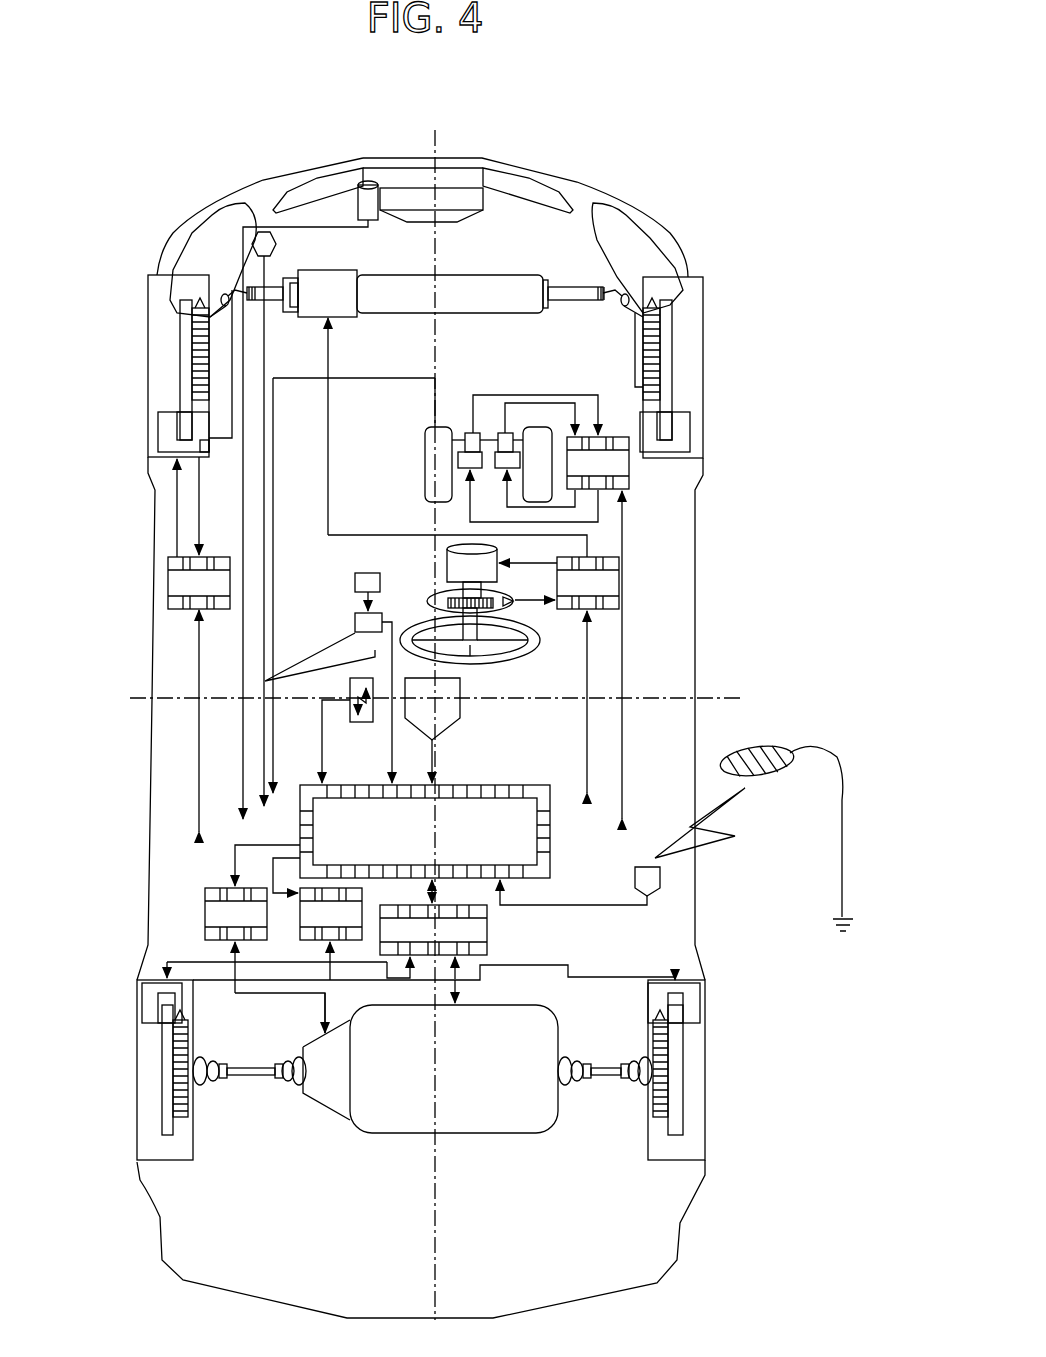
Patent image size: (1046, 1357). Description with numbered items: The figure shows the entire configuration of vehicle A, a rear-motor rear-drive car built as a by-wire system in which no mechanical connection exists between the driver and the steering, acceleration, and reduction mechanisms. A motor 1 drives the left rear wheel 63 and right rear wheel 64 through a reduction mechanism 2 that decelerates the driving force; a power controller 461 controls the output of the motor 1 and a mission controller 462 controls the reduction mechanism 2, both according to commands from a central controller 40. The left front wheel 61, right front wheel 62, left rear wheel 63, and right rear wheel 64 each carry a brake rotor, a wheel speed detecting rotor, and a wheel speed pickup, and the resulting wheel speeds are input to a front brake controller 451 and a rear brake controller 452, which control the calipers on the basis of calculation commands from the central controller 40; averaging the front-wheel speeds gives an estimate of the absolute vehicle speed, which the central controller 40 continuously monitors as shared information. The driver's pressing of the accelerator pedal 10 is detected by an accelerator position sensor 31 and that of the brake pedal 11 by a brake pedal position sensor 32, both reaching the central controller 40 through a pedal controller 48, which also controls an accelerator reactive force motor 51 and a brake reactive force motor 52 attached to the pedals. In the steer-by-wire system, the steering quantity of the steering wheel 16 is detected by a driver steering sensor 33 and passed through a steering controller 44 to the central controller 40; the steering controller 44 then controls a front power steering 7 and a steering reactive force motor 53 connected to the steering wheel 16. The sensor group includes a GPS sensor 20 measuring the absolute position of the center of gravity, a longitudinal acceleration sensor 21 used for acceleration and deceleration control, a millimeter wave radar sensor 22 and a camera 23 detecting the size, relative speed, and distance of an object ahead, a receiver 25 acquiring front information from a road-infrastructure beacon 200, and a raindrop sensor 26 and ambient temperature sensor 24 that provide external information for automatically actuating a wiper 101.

The vehicle A is at (563, 183).
The motor 1 is at (506, 1128).
The reduction mechanism 2 is at (326, 1095).
The power steering 7 is at (500, 277).
The accelerator pedal 10 is at (537, 427).
The brake pedal 11 is at (425, 448).
The steering wheel 16 is at (520, 656).
The GPS sensor 20 is at (462, 718).
The longitudinal acceleration sensor 21 is at (359, 727).
The millimeter wave radar sensor 22 is at (415, 222).
The camera 23 is at (368, 183).
The ambient temperature sensor 24 is at (278, 244).
The receiver 25 is at (635, 881).
The raindrop sensor 26 is at (355, 580).
The accelerator position sensor 31 is at (501, 433).
The brake pedal position sensor 32 is at (467, 433).
The driver steering sensor 33 is at (512, 607).
The central controller 40 is at (525, 843).
The steering controller 44 is at (619, 585).
The pedal controller 48 is at (632, 468).
The accelerator reactive force motor 51 is at (503, 474).
The brake reactive force motor 52 is at (468, 474).
The steering reactive force motor 53 is at (447, 565).
The left front wheel 61 is at (148, 358).
The right front wheel 62 is at (703, 358).
The left rear wheel 63 is at (137, 1113).
The right rear wheel 64 is at (705, 1068).
The wiper 101 is at (307, 667).
The beacon 200 is at (775, 773).
The brake controller 451 is at (214, 557).
The brake controller 452 is at (490, 930).
The power controller 461 is at (315, 942).
The mission controller 462 is at (205, 912).